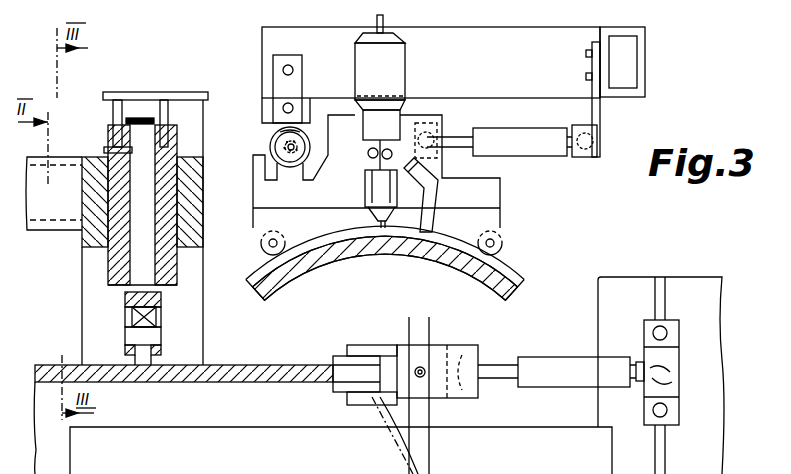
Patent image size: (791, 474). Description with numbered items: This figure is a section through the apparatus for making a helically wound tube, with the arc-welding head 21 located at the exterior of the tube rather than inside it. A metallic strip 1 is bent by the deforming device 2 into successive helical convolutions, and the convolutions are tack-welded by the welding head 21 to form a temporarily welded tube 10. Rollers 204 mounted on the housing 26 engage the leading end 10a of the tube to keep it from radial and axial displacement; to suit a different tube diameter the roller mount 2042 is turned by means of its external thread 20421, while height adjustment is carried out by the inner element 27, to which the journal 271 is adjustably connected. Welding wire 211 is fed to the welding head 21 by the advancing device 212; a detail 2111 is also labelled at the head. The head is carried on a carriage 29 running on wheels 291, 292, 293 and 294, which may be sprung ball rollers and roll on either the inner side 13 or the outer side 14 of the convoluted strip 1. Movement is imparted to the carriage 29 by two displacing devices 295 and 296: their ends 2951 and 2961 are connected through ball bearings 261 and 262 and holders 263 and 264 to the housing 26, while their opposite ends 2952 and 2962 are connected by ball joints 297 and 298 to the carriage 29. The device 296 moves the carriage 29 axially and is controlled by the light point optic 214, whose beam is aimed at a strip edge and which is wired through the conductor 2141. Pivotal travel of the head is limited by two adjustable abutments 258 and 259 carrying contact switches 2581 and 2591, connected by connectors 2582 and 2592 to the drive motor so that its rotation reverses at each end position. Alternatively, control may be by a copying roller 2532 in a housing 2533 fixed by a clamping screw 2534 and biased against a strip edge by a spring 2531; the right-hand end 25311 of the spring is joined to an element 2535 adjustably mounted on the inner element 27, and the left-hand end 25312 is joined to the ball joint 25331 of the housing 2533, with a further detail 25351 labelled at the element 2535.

The metallic strip 1 is at (437, 250).
The deforming device 2 is at (690, 278).
The tack-welded tube 10 is at (33, 372).
The leading end of the tube 10a is at (258, 358).
The inner side of the convoluted strip 13 is at (518, 294).
The outer side of the convoluted strip 14 is at (526, 280).
The arc-welding head 21 is at (368, 188).
The housing 26 is at (95, 290).
The inner element 27 is at (661, 375).
The carriage 29 is at (502, 198).
The rollers 204 is at (152, 360).
The welding wire 211 is at (370, 153).
The advancing device 212 is at (398, 85).
The light point optic 214 is at (432, 210).
The abutment 258 is at (356, 473).
The abutment 259 is at (385, 435).
The ball bearing 261 is at (602, 125).
The ball bearing 262 is at (272, 144).
The holder 263 is at (600, 108).
The holder 264 is at (284, 64).
The journal 271 is at (101, 470).
The wheel 291 is at (505, 244).
The wheel 292 is at (490, 243).
The wheel 293 is at (286, 243).
The wheel 294 is at (273, 243).
The displacing device 295 is at (540, 150).
The displacing device 296 is at (270, 143).
The ball joint 297 is at (428, 135).
The ball joint 298 is at (273, 153).
The roller mount 2042 is at (182, 150).
The tool tip 2111 is at (378, 230).
The conductor 2141 is at (148, 427).
The spring 2531 is at (592, 384).
The copying roller 2532 is at (347, 377).
The housing of the copying roller 2533 is at (360, 347).
The clamping screw 2534 is at (422, 368).
The element 2535 is at (668, 334).
The contact switch 2581 is at (476, 460).
The connector 2582 is at (598, 407).
The contact switch 2591 is at (530, 412).
The connector 2592 is at (512, 473).
The end of displacing device 2951 is at (574, 130).
The opposite end of displacing device 2952 is at (445, 143).
The end of displacing device 2961 is at (293, 145).
The opposite end of displacing device 2962 is at (310, 78).
The external thread 20421 is at (107, 147).
The right-hand end of the spring 25311 is at (642, 360).
The left-hand end of the spring 25312 is at (497, 362).
The ball joint of the housing 25331 is at (448, 398).
The guide block slot 25351 is at (668, 372).